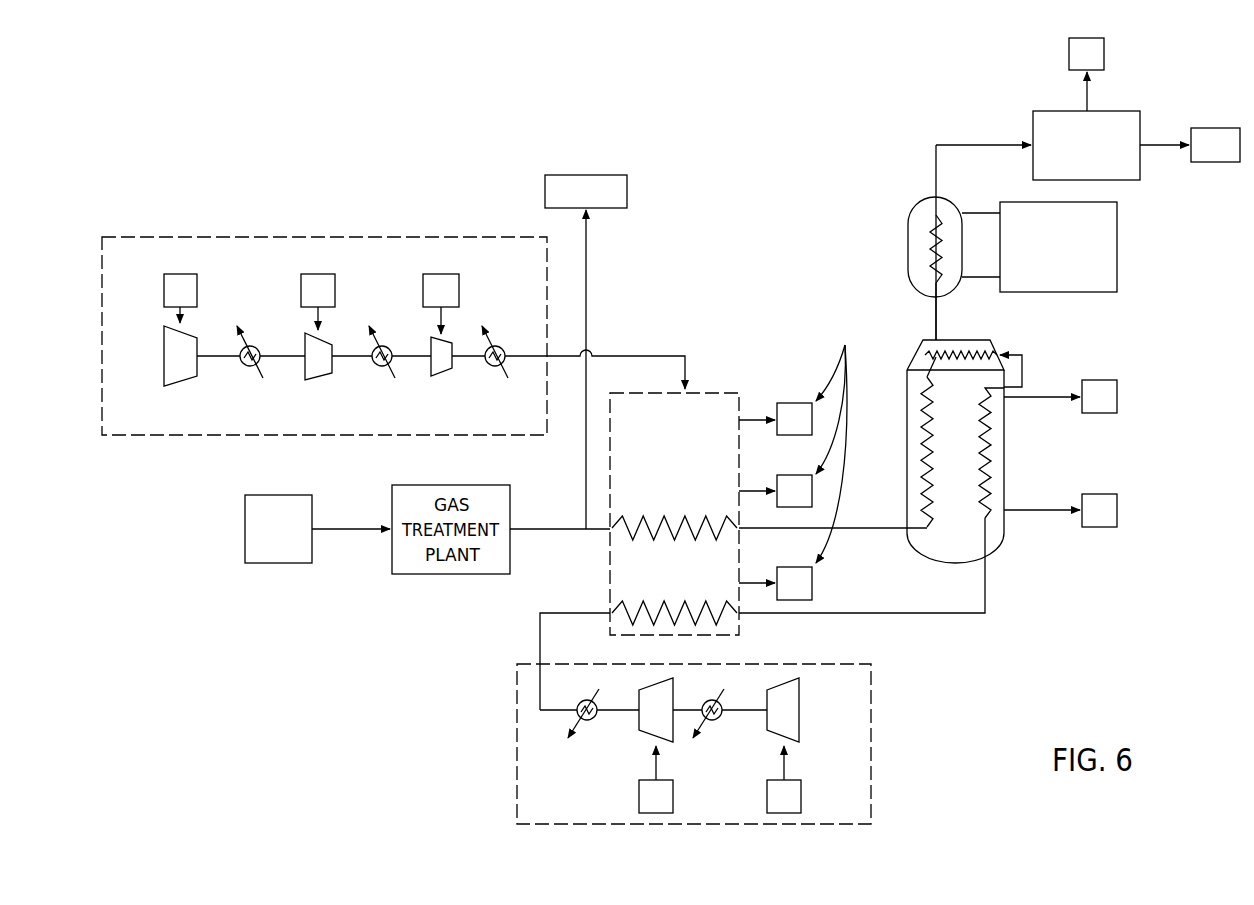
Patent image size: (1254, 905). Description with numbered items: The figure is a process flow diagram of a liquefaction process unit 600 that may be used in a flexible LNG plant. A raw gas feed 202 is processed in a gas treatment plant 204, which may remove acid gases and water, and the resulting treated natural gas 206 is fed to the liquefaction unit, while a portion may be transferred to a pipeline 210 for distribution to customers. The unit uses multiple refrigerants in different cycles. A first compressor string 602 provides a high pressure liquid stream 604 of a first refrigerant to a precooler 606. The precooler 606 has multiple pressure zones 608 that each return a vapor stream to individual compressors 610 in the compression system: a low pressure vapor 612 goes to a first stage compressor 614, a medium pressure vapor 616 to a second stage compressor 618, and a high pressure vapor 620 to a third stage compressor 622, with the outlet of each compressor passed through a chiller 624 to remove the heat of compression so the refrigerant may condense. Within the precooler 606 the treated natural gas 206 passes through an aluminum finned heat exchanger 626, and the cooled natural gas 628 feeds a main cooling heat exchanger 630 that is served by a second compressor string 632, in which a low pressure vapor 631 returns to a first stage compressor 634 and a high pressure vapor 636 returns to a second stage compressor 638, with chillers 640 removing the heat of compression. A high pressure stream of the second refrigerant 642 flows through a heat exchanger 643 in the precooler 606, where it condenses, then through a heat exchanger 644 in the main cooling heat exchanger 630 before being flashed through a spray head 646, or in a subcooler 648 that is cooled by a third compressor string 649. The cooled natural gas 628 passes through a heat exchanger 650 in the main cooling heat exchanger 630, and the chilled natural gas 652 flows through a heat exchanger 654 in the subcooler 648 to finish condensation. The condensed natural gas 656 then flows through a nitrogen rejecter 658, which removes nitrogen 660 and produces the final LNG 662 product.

The liquefaction process unit 600 is at (294, 148).
The first compressor string 602 is at (385, 236).
The high pressure liquid stream 604 is at (636, 356).
The precooler 606 is at (701, 390).
The pressure zones 608 is at (837, 439).
The compressors 610 is at (142, 310).
The low pressure vapor 612 is at (197, 290).
The first stage compressor 614 is at (185, 380).
The medium pressure vapor 616 is at (335, 290).
The second stage compressor 618 is at (322, 380).
The high pressure vapor 620 is at (459, 290).
The third stage compressor 622 is at (445, 376).
The chiller 624 is at (247, 366).
The aluminum finned heat exchanger 626 is at (636, 537).
The cooled natural gas 628 is at (868, 526).
The main cooling heat exchanger 630 is at (1002, 548).
The low pressure vapor 631 is at (1119, 509).
The second compressor string 632 is at (871, 697).
The first stage compressor 634 is at (767, 722).
The high pressure vapor 636 is at (1119, 394).
The second stage compressor 638 is at (639, 722).
The chillers 640 is at (592, 720).
The high pressure stream of the second refrigerant 642 is at (540, 644).
The heat exchanger 643 is at (635, 607).
The heat exchanger 644 is at (994, 449).
The spray head 646 is at (958, 361).
The subcooler 648 is at (908, 260).
The third compressor string 649 is at (1117, 226).
The heat exchanger 650 is at (921, 430).
The chilled natural gas 652 is at (940, 318).
The heat exchanger 654 is at (908, 225).
The condensed natural gas 656 is at (975, 144).
The nitrogen rejecter 658 is at (1125, 110).
The nitrogen 660 is at (1068, 50).
The LNG 662 is at (1160, 143).
The raw gas feed 202 is at (245, 529).
The gas treatment plant 204 is at (392, 503).
The treated natural gas 206 is at (561, 527).
The pipeline 210 is at (627, 192).